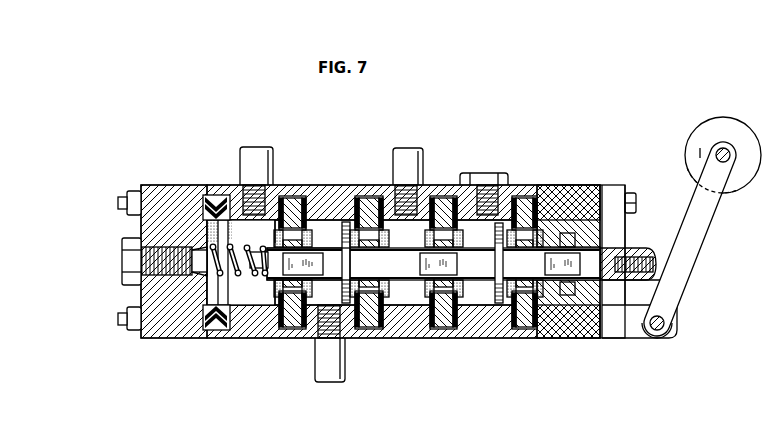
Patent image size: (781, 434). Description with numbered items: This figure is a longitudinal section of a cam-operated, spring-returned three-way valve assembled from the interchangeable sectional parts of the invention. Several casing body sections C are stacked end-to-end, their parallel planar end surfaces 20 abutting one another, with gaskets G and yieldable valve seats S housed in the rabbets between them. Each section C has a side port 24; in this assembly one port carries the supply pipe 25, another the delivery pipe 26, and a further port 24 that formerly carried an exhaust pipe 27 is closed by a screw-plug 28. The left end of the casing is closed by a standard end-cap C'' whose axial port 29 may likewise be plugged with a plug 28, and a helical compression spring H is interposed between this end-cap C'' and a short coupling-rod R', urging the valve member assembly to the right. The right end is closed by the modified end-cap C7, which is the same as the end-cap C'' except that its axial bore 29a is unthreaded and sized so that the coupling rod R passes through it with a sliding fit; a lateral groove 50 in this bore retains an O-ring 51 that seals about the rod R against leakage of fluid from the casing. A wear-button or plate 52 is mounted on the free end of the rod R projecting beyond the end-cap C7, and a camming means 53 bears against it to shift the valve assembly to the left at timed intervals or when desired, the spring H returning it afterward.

The end surfaces 20 is at (216, 197).
The port 24 is at (283, 198).
The supply pipe 25 is at (404, 153).
The delivery pipe 26 is at (332, 366).
The exhaust pipe 27 is at (268, 151).
The threaded plug 28 is at (482, 178).
The port 29 is at (188, 275).
The axial bore 29a is at (625, 294).
The groove 50 is at (578, 296).
The O-ring 51 is at (605, 236).
The wear-button 52 is at (650, 250).
The camming means 53 is at (705, 233).
The casing body section C is at (404, 161).
The casing end-cap C'' is at (216, 226).
The modified end-cap C7 is at (566, 190).
The gasket G is at (216, 330).
The helical compression spring H is at (235, 243).
The valve coupling rod R is at (433, 262).
The short coupling rod R' is at (308, 264).
The valve seat S is at (297, 312).